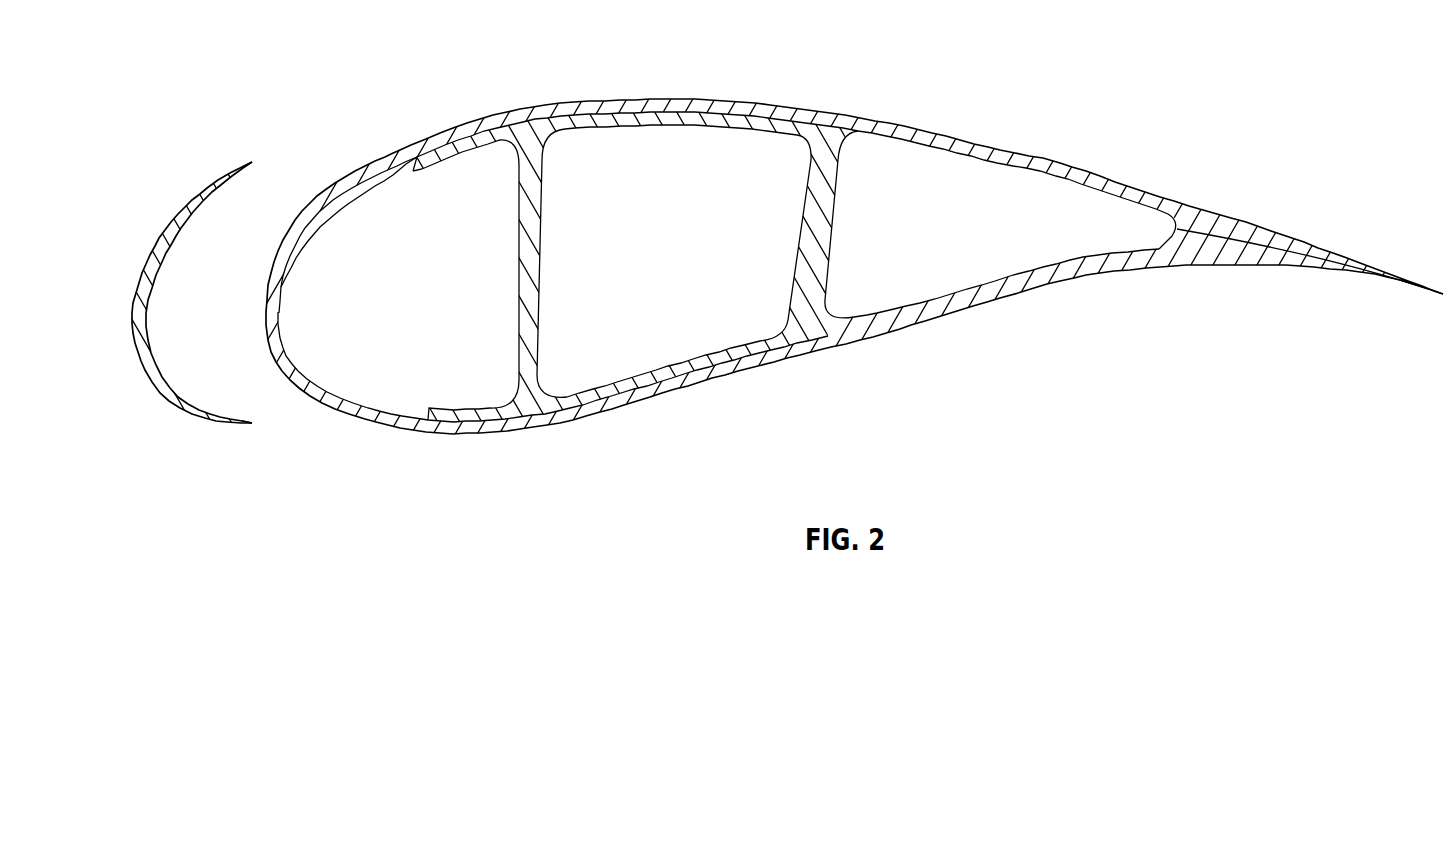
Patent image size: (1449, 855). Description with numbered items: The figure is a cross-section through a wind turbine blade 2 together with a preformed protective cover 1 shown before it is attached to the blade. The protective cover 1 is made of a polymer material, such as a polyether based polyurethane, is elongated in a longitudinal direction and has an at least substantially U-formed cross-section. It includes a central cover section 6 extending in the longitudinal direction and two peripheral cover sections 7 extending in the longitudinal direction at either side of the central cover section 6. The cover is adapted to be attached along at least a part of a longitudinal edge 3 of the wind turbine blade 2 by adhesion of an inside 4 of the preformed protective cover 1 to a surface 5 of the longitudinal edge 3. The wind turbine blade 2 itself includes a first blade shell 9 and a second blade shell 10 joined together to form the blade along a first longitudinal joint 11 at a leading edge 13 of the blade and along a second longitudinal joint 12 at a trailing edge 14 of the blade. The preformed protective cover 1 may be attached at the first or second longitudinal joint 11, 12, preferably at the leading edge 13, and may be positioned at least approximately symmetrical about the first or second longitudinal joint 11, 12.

The preformed protective cover 1 is at (206, 302).
The wind turbine blade 2 is at (850, 263).
The longitudinal edge 3 is at (287, 392).
The inside 4 is at (147, 308).
The surface 5 is at (307, 213).
The central cover section 6 is at (127, 284).
The peripheral cover sections 7 is at (205, 187).
The first blade shell 9 is at (901, 133).
The second blade shell 10 is at (958, 300).
The first longitudinal joint 11 is at (280, 311).
The second longitudinal joint 12 is at (1290, 248).
The leading edge 13 is at (310, 190).
The trailing edge 14 is at (1358, 204).